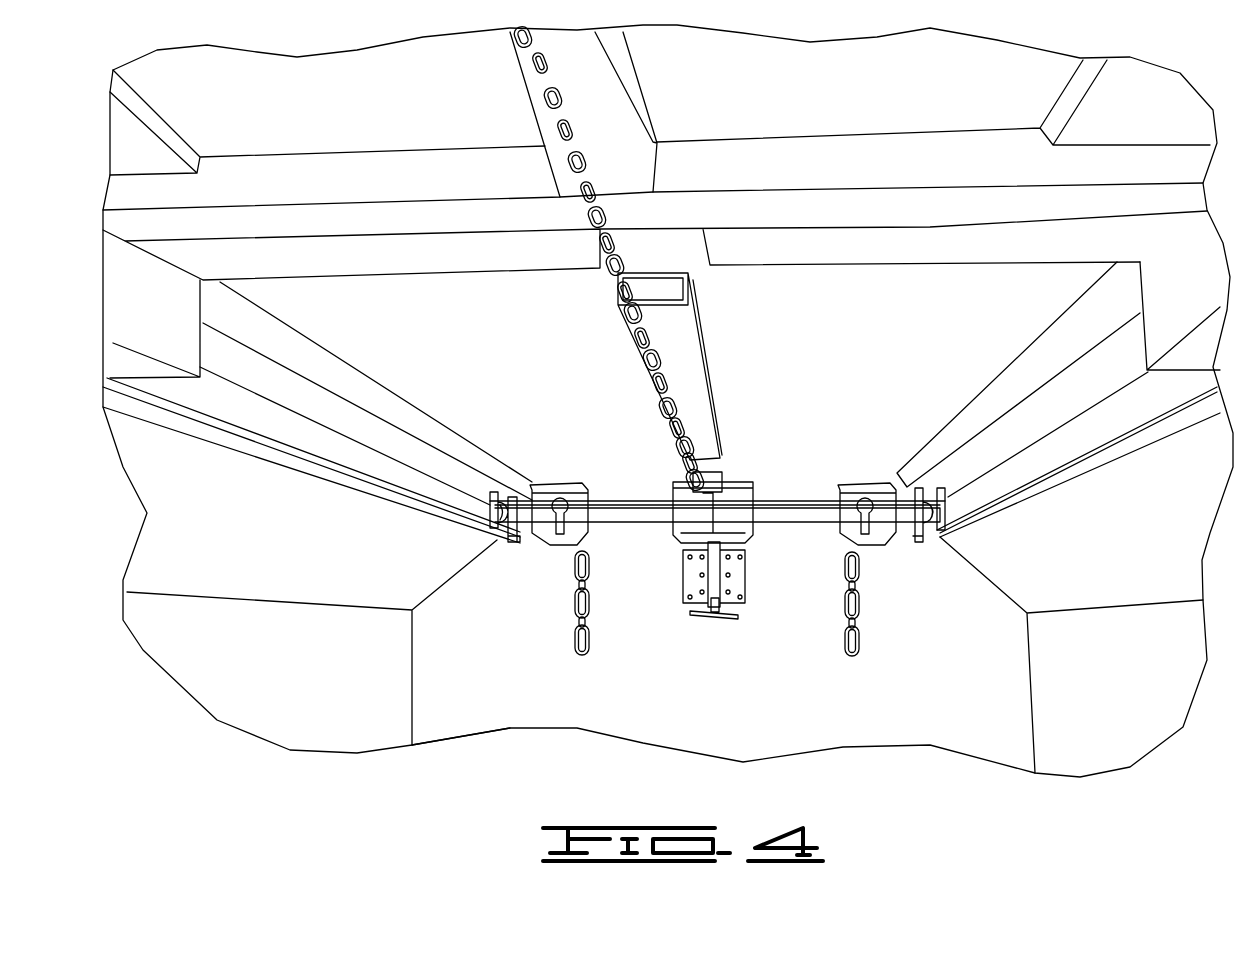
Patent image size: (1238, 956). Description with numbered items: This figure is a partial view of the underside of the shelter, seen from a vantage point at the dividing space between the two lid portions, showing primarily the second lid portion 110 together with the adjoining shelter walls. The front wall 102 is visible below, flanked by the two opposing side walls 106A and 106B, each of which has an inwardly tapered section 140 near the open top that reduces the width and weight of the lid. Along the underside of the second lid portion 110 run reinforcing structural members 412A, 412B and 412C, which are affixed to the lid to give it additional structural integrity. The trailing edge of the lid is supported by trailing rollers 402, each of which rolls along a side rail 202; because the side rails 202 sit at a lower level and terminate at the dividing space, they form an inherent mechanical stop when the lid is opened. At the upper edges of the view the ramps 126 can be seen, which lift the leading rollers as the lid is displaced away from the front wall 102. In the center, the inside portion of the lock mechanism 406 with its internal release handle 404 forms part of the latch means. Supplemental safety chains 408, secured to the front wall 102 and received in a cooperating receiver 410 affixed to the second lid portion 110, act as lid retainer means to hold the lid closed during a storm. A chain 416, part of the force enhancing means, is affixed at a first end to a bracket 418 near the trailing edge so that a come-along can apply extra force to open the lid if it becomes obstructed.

The front wall 102 is at (801, 734).
The first side wall 106A is at (314, 695).
The second side wall 106B is at (1141, 715).
The second lid portion 110 is at (514, 375).
The ramp 126 is at (171, 313).
The inwardly tapered section 140 is at (1140, 548).
The side rail 202 is at (1015, 496).
The trailing roller 402 is at (935, 542).
The internal release handle 404 is at (697, 614).
The lock mechanism 406 is at (710, 568).
The supplemental safety chain 408 is at (577, 634).
The receiver 410 is at (548, 536).
The reinforcing structural member 412A is at (290, 336).
The reinforcing structural member 412B is at (687, 342).
The reinforcing structural member 412C is at (1057, 338).
The chain 416 is at (545, 98).
The bracket 418 is at (713, 512).